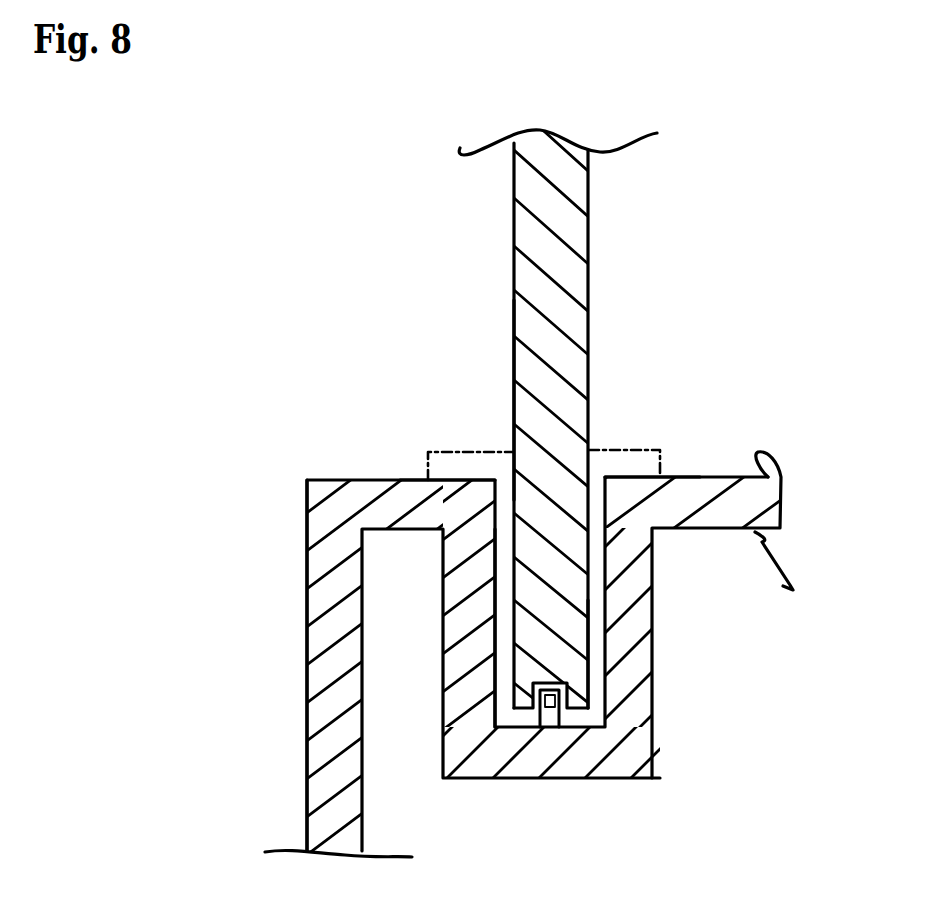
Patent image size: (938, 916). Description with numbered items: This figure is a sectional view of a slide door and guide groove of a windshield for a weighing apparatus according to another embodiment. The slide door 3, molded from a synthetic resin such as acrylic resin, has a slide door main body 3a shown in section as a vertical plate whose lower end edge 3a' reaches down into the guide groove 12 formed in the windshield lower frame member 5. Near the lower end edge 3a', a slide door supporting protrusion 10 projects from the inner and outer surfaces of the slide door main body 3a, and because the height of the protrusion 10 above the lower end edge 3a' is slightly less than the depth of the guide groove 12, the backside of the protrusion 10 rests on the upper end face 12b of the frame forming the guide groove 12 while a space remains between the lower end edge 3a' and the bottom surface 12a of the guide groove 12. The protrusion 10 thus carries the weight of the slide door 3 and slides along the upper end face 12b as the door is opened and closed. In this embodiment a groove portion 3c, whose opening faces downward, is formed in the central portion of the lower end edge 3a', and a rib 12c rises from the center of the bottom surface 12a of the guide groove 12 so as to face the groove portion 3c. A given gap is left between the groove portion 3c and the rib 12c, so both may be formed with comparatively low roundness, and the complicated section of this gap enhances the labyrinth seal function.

The slide door 3 is at (588, 275).
The slide door main body 3a is at (493, 423).
The lower end edge 3a' is at (668, 779).
The groove portion 3c is at (548, 690).
The windshield lower frame member 5 is at (307, 518).
The slide door supporting protrusion 10 is at (437, 452).
The guide groove 12 is at (627, 566).
The bottom surface 12a is at (505, 722).
The upper end face 12b is at (460, 480).
The rib 12c is at (555, 695).